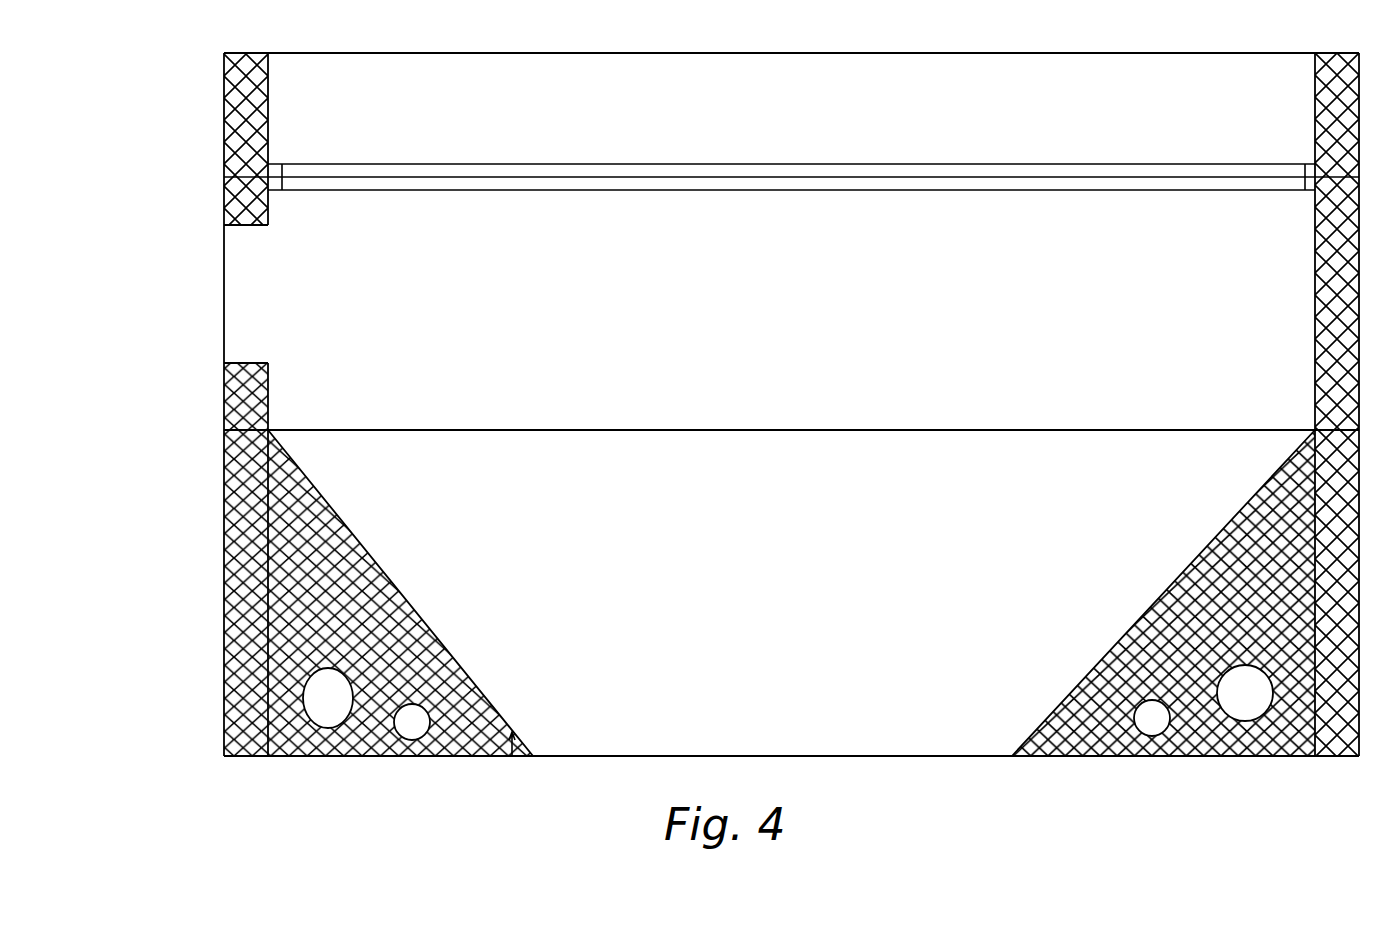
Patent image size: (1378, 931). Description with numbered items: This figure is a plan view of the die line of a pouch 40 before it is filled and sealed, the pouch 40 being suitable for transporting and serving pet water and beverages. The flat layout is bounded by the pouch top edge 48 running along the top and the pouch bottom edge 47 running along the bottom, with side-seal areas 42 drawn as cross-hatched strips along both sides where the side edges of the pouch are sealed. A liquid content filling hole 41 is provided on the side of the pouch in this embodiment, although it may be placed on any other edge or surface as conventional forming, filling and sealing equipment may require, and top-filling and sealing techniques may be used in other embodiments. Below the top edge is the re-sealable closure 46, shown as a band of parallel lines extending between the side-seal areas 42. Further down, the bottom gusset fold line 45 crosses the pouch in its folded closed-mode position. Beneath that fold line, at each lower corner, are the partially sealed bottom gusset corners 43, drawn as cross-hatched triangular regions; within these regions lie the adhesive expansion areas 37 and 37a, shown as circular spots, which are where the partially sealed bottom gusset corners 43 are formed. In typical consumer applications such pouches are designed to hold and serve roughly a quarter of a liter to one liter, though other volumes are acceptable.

The adhesive expansion area 37 is at (334, 708).
The adhesive expansion area 37a is at (413, 730).
The pouch 40 is at (210, 420).
The liquid content filling hole 41 is at (223, 275).
The side-seal area 42 is at (270, 105).
The partially sealed bottom gusset corner 43 is at (355, 550).
The bottom gusset fold line 45 is at (907, 430).
The re-sealable closure 46 is at (703, 164).
The pouch bottom edge 47 is at (731, 756).
The pouch top edge 48 is at (893, 53).